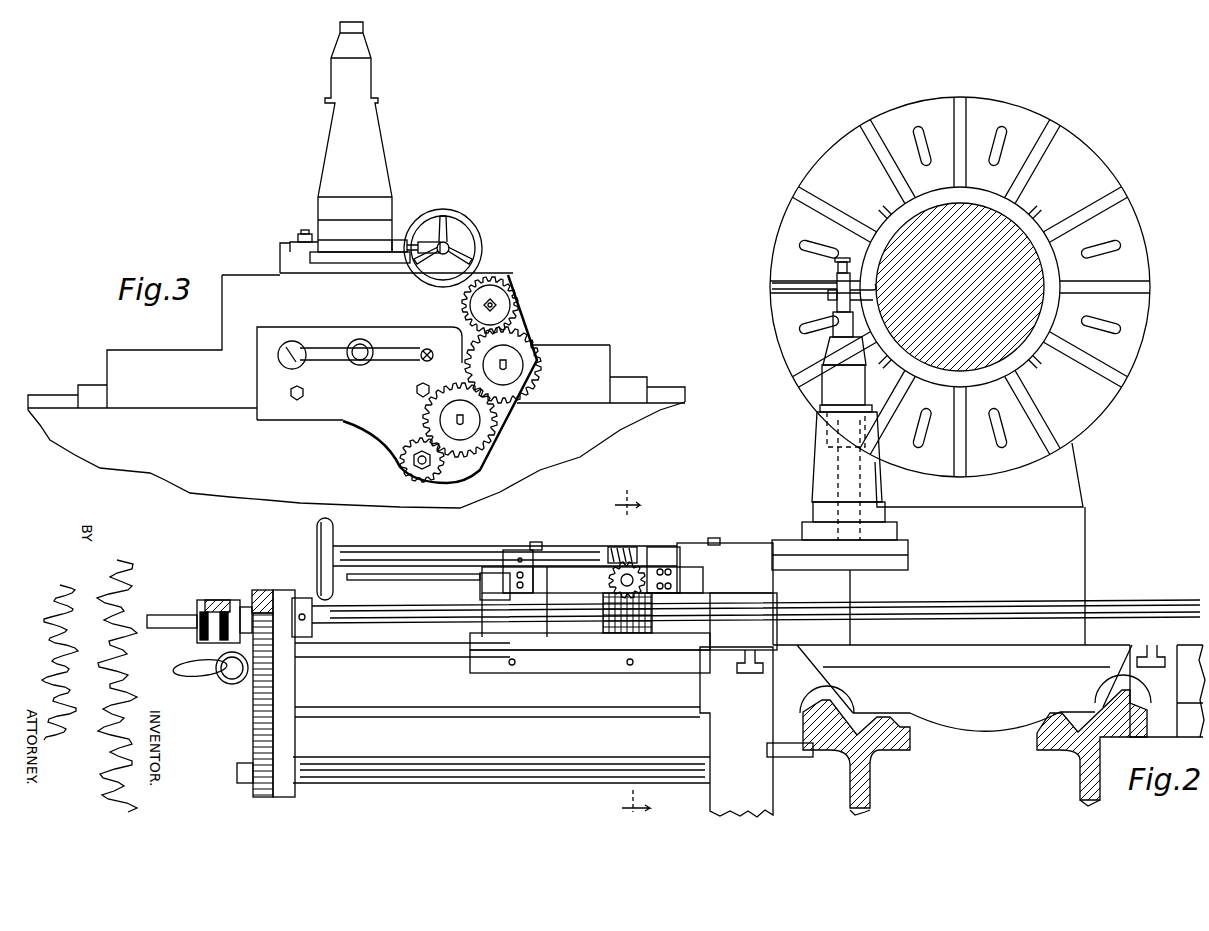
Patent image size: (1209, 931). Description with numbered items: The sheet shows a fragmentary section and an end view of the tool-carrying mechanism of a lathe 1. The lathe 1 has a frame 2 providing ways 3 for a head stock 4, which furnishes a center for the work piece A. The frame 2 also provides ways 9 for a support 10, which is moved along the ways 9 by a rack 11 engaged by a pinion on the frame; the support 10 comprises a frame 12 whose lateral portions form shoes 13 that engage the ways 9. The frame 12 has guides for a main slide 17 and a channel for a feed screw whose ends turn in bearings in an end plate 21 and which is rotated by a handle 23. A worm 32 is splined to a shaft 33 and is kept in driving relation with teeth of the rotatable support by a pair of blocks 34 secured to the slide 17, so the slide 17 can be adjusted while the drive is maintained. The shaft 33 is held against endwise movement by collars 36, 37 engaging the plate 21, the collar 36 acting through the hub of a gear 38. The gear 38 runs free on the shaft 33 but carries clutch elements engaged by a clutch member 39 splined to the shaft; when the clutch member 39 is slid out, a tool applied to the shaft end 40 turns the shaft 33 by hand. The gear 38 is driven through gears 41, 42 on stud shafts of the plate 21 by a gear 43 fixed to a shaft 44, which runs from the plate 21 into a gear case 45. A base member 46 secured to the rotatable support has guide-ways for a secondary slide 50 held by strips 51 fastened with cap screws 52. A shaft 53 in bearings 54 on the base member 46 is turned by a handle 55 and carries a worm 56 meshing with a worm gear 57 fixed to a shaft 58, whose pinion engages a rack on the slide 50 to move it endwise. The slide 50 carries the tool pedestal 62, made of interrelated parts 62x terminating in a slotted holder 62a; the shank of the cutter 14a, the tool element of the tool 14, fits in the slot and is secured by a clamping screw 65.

In FIG. 2, the lathe 1 is at (975, 749).
In FIG. 2, the frame 2 is at (850, 788).
In FIG. 2, the ways 3 is at (890, 715).
In FIG. 2, the head stock 4 is at (632, 661).
In FIG. 2, the ways 9 is at (835, 703).
In FIG. 2, the support 10 is at (990, 720).
In FIG. 2, the rack 11 is at (790, 752).
In FIG. 3, the frame 12 is at (645, 420).
In FIG. 3, the shoes or slides 13 is at (48, 398).
In FIG. 2, the shoes or slides 13 is at (812, 700).
In FIG. 2, the tool 14 is at (960, 287).
In FIG. 2, the cutter 14a is at (828, 296).
In FIG. 3, the main slide 17 is at (240, 322).
In FIG. 3, the end plate 21 is at (326, 412).
In FIG. 2, the end plate 21 is at (282, 797).
In FIG. 3, the handle 23 is at (328, 358).
In FIG. 2, the handle 23 is at (196, 670).
In FIG. 2, the worm 32 is at (625, 636).
In FIG. 2, the shaft 33 is at (997, 600).
In FIG. 2, the blocks 34 is at (558, 600).
In FIG. 2, the collar 36 is at (244, 607).
In FIG. 2, the collar 37 is at (304, 587).
In FIG. 3, the gear 38 is at (512, 280).
In FIG. 2, the gear 38 is at (263, 590).
In FIG. 2, the clutch member 39 is at (215, 600).
In FIG. 2, the shaft end 40 is at (165, 613).
In FIG. 3, the gear 41 is at (521, 333).
In FIG. 3, the gear 42 is at (486, 432).
In FIG. 3, the gear 43 is at (408, 475).
In FIG. 2, the shaft 44 is at (373, 773).
In FIG. 2, the gear case 45 is at (705, 790).
In FIG. 3, the base member 46 is at (282, 262).
In FIG. 2, the base member 46 is at (775, 583).
In FIG. 3, the secondary slide 50 is at (345, 265).
In FIG. 3, the strips 51 is at (290, 246).
In FIG. 3, the cap screws 52 is at (298, 236).
In FIG. 2, the shaft 53 is at (578, 550).
In FIG. 2, the bearings 54 is at (521, 552).
In FIG. 3, the handle 55 is at (470, 232).
In FIG. 2, the handle 55 is at (333, 533).
In FIG. 2, the worm 56 is at (627, 515).
In FIG. 2, the worm gear 57 is at (609, 575).
In FIG. 2, the shaft 58 is at (668, 577).
In FIG. 3, the tool pedestal 62 is at (373, 156).
In FIG. 2, the tool pedestal 62 is at (843, 406).
In FIG. 2, the slotted holder 62a is at (772, 288).
In FIG. 2, the interrelated parts 62x is at (830, 382).
In FIG. 2, the clamping screw 65 is at (856, 250).
In FIG. 2, the work piece A is at (1032, 272).